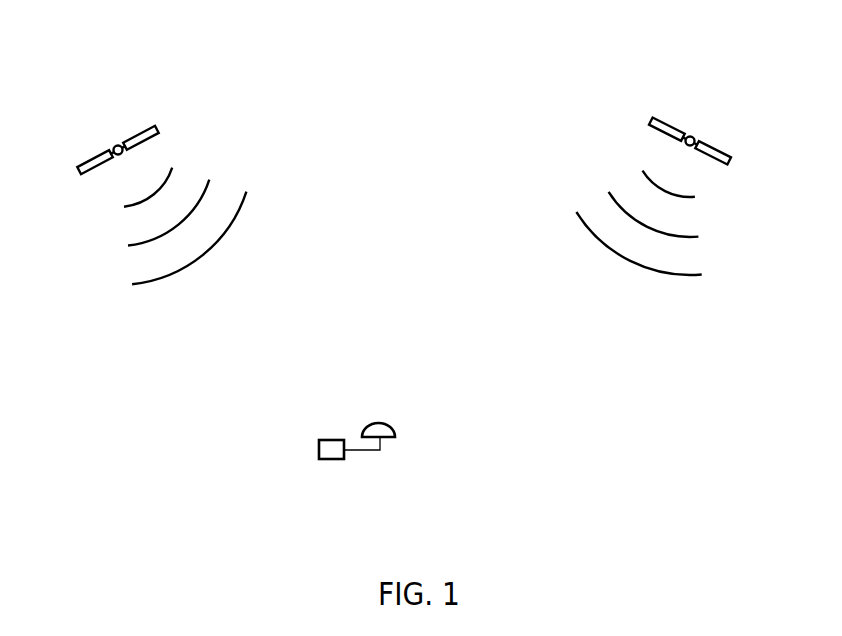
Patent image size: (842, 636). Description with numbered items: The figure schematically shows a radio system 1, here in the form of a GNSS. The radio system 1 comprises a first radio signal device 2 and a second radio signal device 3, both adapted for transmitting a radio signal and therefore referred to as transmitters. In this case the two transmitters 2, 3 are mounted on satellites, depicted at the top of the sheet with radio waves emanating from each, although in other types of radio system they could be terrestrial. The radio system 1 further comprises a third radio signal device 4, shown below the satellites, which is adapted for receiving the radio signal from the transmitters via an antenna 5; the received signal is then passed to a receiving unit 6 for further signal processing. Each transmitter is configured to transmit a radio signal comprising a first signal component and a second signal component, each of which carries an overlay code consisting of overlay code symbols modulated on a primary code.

The radio system 1 is at (772, 72).
The first radio signal device 2 is at (113, 153).
The second radio signal device 3 is at (693, 138).
The third radio signal device 4 is at (324, 396).
The antenna 5 is at (387, 438).
The receiving unit 6 is at (323, 453).